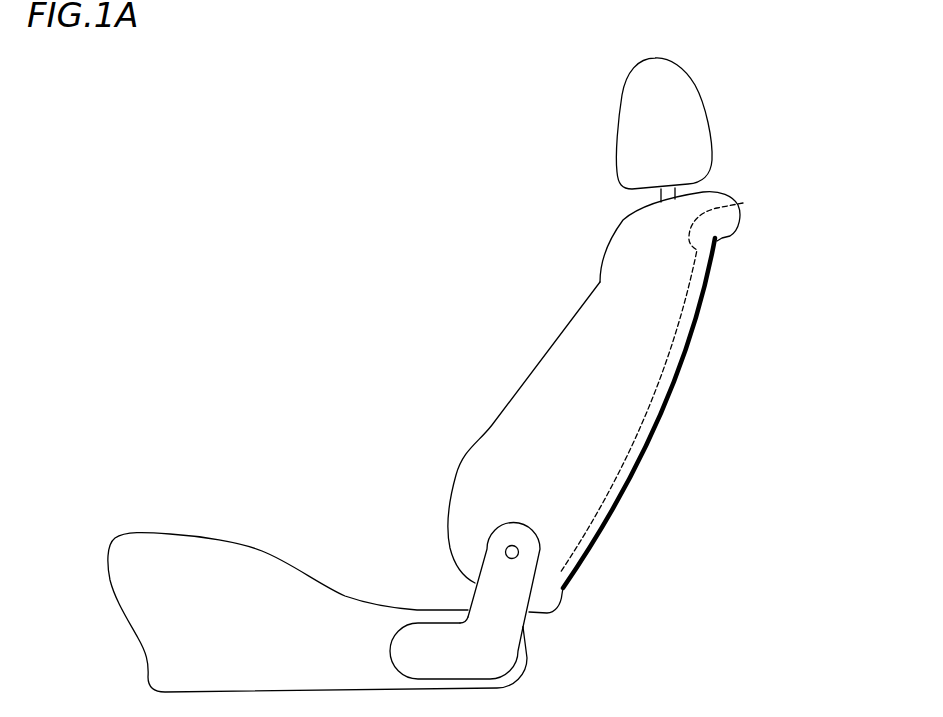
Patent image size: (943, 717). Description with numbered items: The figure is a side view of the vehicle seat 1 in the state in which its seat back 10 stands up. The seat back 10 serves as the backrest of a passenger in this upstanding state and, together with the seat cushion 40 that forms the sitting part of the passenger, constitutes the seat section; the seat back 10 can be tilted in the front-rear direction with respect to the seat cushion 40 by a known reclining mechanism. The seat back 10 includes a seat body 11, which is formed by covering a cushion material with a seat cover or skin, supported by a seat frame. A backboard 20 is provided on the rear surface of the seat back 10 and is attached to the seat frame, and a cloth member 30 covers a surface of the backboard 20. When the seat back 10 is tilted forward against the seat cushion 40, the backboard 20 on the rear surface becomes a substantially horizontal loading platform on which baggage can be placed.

The vehicle seat 1 is at (165, 85).
The seat back 10 is at (518, 310).
The seat body 11 is at (527, 430).
The backboard 20 is at (743, 203).
The cloth member 30 is at (698, 307).
The seat cushion 40 is at (228, 532).